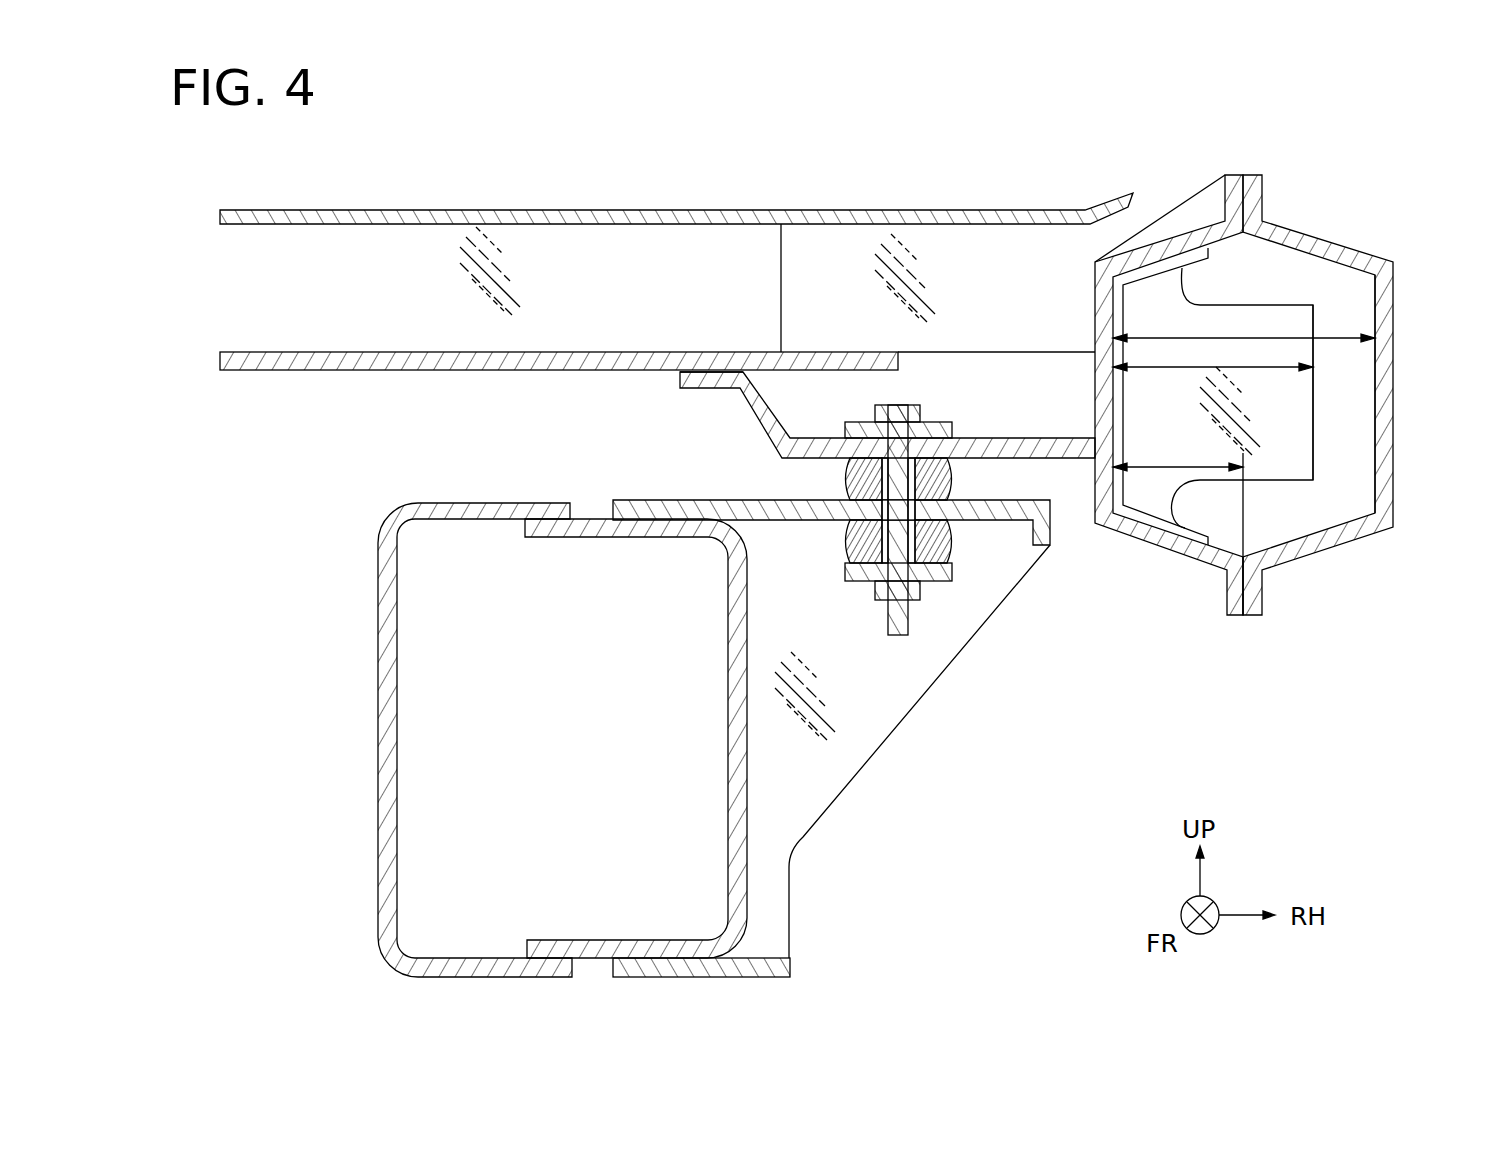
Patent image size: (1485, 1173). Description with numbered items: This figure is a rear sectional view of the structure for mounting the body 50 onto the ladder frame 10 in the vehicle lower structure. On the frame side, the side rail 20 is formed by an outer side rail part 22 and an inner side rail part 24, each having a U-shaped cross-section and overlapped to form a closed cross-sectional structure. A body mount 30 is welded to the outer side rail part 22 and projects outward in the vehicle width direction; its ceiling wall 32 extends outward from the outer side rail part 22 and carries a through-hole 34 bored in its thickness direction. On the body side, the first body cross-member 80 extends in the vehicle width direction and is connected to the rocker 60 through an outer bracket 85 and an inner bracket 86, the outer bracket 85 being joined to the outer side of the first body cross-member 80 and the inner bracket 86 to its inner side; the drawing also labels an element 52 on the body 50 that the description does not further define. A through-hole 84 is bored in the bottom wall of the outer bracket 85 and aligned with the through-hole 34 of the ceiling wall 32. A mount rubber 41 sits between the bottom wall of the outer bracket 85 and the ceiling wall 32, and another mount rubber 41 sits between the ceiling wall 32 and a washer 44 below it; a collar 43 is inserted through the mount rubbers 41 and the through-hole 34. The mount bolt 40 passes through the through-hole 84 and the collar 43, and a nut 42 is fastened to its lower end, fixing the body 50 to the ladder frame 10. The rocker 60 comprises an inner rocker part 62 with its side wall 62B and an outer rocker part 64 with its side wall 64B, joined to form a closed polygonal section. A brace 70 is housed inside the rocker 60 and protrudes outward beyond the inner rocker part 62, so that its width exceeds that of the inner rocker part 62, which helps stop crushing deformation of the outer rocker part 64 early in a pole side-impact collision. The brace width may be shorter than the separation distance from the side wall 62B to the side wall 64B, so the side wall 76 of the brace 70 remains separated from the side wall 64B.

The ladder frame 10 is at (831, 723).
The side rail 20 is at (562, 740).
The outer side rail part 22 is at (732, 640).
The inner side rail part 24 is at (402, 740).
The body mount 30 is at (845, 752).
The ceiling wall 32 is at (831, 513).
The through-hole 34 is at (856, 533).
The mount bolt 40 is at (908, 563).
The mount rubber 41 is at (940, 478).
The nut 42 is at (860, 590).
The collar 43 is at (867, 477).
The washer 44 is at (933, 422).
The body 50 is at (676, 287).
The upper panel 52 is at (567, 213).
The rocker 60 is at (1244, 474).
The inner rocker part 62 is at (1169, 440).
The side wall 62B is at (1123, 320).
The outer rocker part 64 is at (1318, 436).
The side wall 64B is at (1373, 305).
The brace 70 is at (1266, 398).
The side wall 76 is at (1315, 400).
The first body cross-member 80 is at (676, 255).
The through-hole 84 is at (843, 415).
The outer bracket 85 is at (700, 383).
The inner bracket 86 is at (833, 257).